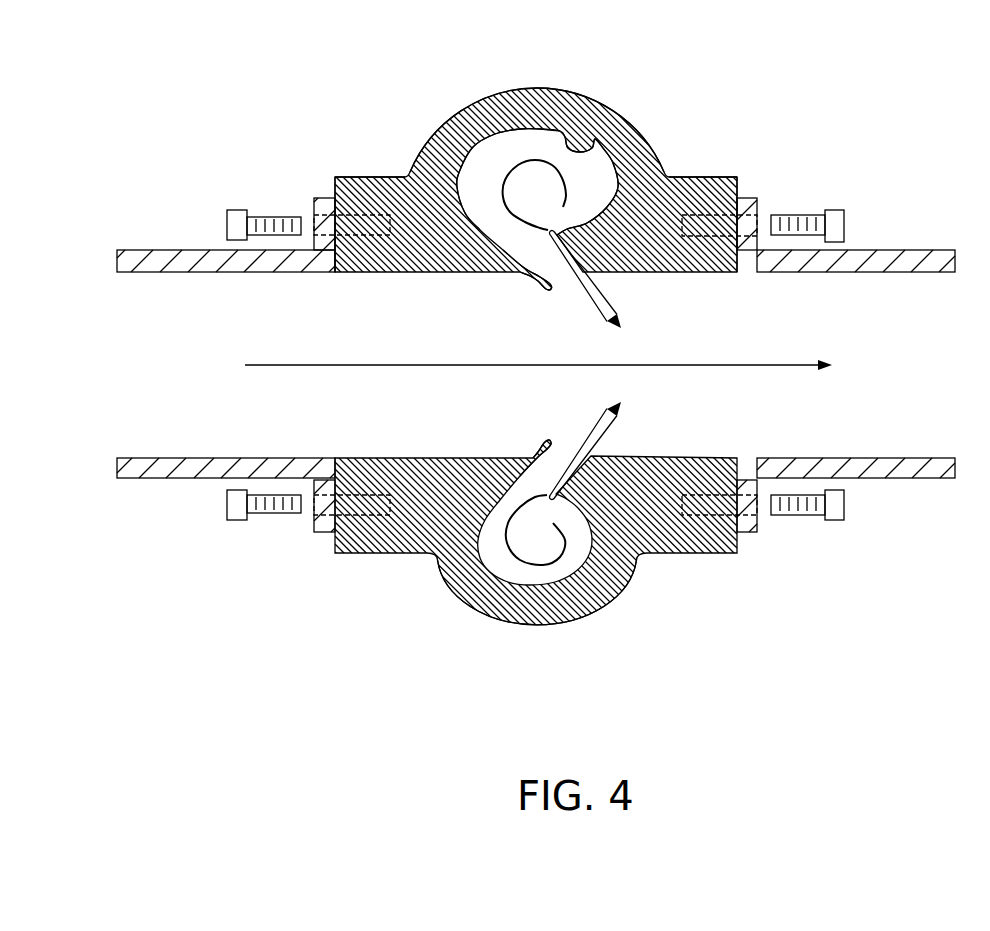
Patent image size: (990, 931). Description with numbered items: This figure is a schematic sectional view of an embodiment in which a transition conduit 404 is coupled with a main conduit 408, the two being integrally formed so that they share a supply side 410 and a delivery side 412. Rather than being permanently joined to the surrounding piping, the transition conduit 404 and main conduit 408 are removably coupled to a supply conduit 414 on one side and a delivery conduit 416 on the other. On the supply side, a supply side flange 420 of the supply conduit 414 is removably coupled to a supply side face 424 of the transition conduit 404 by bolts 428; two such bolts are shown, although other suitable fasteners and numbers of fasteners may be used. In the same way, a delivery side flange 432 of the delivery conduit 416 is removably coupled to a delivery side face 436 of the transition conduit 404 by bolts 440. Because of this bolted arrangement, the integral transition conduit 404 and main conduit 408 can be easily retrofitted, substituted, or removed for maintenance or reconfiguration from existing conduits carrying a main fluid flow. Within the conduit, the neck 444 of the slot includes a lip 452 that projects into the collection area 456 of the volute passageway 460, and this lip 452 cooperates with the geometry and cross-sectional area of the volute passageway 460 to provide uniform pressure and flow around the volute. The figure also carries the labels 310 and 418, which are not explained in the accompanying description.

The valve body dome (lower half) 310 is at (465, 605).
The transition conduit 404 is at (585, 90).
The main conduit 408 is at (378, 274).
The supply side 410 is at (364, 162).
The delivery side 412 is at (708, 165).
The supply conduit 414 is at (162, 250).
The delivery conduit 416 is at (910, 250).
The outlet tip 418 is at (557, 278).
The supply side flange 420 is at (320, 198).
The supply side face 424 is at (336, 177).
The bolts 428 is at (237, 210).
The delivery side flange 432 is at (753, 198).
The delivery side face 436 is at (739, 178).
The bolts 440 is at (833, 210).
The neck 444 is at (588, 273).
The lip 452 is at (543, 223).
The collection area 456 is at (507, 150).
The volute passageway 460 is at (597, 148).